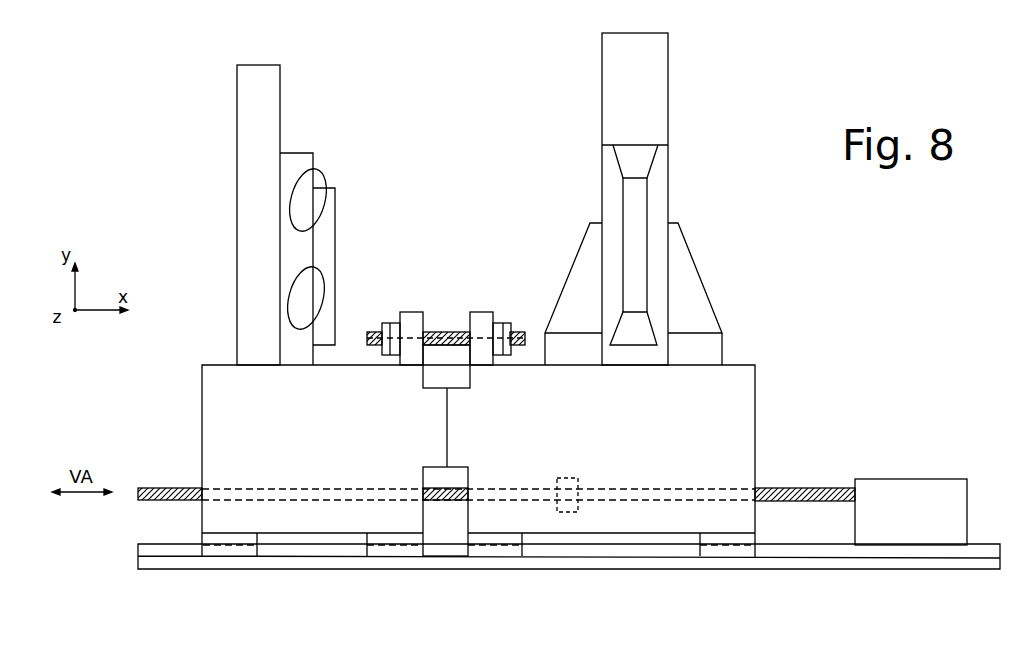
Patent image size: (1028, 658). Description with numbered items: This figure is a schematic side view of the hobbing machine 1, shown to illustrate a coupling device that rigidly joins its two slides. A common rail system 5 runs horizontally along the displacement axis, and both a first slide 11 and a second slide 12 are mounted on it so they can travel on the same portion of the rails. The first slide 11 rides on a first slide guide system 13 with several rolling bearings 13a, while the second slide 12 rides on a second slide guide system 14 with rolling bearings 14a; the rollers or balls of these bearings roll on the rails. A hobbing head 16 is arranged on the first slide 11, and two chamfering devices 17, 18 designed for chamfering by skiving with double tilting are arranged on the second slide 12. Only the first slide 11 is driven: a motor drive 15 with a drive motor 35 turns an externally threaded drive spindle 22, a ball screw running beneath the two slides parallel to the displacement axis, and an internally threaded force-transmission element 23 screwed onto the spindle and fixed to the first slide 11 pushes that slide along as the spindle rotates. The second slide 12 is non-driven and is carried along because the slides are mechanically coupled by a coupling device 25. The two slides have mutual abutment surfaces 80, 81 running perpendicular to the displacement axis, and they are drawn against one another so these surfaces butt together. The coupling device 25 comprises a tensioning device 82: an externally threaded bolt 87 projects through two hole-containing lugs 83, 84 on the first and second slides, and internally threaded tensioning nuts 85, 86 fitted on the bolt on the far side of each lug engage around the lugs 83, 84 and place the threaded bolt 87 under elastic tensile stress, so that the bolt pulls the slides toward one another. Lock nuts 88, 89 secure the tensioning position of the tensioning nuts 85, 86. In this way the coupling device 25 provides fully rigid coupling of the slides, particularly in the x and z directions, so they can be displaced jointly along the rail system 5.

The hobbing machine 1 is at (870, 290).
The rail system 5 is at (982, 544).
The first slide 11 is at (742, 390).
The second slide 12 is at (228, 390).
The first slide guide system 13 is at (512, 552).
The rolling bearings 13a is at (500, 540).
The second slide guide system 14 is at (245, 552).
The rolling bearings 14a is at (238, 540).
The motor drive 15 is at (869, 484).
The hobbing head 16 is at (640, 202).
The chamfering device 17 is at (302, 292).
The chamfering device 18 is at (302, 202).
The drive spindle 22 is at (797, 488).
The force-transmission element 23 is at (580, 482).
The coupling device 25 is at (446, 256).
The tensioning device 82 is at (450, 306).
The drive motor 35 is at (905, 497).
The abutment surface 80 is at (447, 448).
The abutment surface 81 is at (445, 455).
The lug 83 is at (478, 323).
The lug 84 is at (413, 320).
The tensioning nut 85 is at (493, 362).
The tensioning nut 86 is at (395, 365).
The threaded bolt 87 is at (437, 332).
The lock nut 88 is at (510, 355).
The lock nut 89 is at (385, 355).